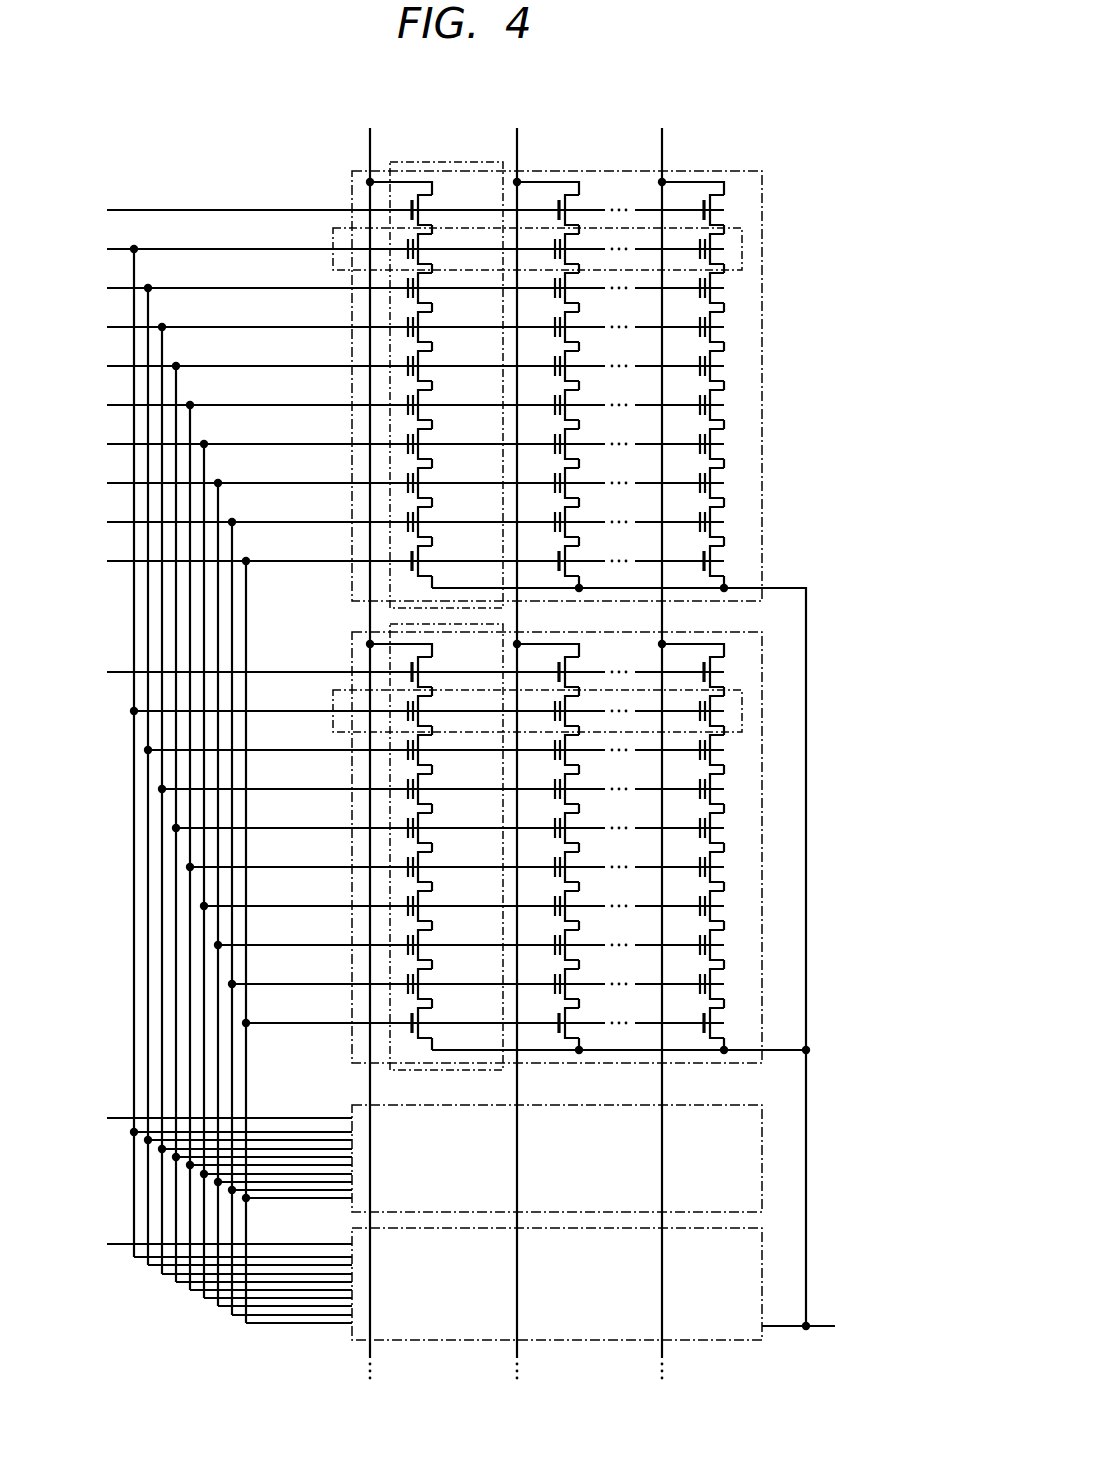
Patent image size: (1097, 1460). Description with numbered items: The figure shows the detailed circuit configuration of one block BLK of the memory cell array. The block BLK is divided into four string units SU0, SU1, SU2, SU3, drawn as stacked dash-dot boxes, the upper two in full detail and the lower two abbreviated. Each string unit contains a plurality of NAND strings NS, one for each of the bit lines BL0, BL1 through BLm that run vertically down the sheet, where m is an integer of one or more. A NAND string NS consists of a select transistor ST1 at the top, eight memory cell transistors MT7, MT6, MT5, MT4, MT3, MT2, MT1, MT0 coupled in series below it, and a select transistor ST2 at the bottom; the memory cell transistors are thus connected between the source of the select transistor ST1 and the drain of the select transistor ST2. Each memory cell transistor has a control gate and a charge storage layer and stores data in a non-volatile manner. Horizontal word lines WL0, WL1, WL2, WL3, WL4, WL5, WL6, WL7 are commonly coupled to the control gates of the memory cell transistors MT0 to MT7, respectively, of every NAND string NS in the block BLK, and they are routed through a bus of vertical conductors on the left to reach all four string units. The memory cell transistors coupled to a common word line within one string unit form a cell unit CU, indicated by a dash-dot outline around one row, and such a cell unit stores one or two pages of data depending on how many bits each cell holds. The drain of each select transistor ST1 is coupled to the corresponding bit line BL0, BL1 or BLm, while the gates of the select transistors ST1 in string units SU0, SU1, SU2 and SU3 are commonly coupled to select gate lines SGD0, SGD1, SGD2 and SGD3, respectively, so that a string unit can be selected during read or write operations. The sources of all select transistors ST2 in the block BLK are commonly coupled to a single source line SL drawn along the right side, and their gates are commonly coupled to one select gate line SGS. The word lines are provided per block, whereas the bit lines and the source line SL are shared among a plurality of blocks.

The block BLK is at (821, 75).
The bit line BL0 is at (370, 743).
The bit line BL1 is at (517, 743).
The bit line BLm is at (662, 743).
The NAND string NS is at (442, 163).
The cell unit CU is at (742, 248).
The string unit SU0 is at (762, 384).
The string unit SU1 is at (762, 843).
The string unit SU2 is at (762, 1159).
The string unit SU3 is at (762, 1281).
The source line SL is at (645, 960).
The select gate line SGD0 is at (390, 210).
The select gate line SGD1 is at (390, 672).
The select gate line SGD2 is at (204, 1118).
The select gate line SGD3 is at (204, 1244).
The select gate line SGS is at (396, 937).
The word line WL0 is at (395, 913).
The word line WL1 is at (395, 889).
The word line WL2 is at (395, 866).
The word line WL3 is at (395, 842).
The word line WL4 is at (395, 819).
The word line WL5 is at (395, 795).
The word line WL6 is at (395, 771).
The word line WL7 is at (395, 748).
The select transistor ST1 is at (568, 438).
The select transistor ST2 is at (568, 789).
The memory cell transistor MT0 is at (566, 750).
The memory cell transistor MT1 is at (566, 711).
The memory cell transistor MT2 is at (566, 672).
The memory cell transistor MT3 is at (566, 633).
The memory cell transistor MT4 is at (566, 594).
The memory cell transistor MT5 is at (566, 555).
The memory cell transistor MT6 is at (566, 516).
The memory cell transistor MT7 is at (566, 477).